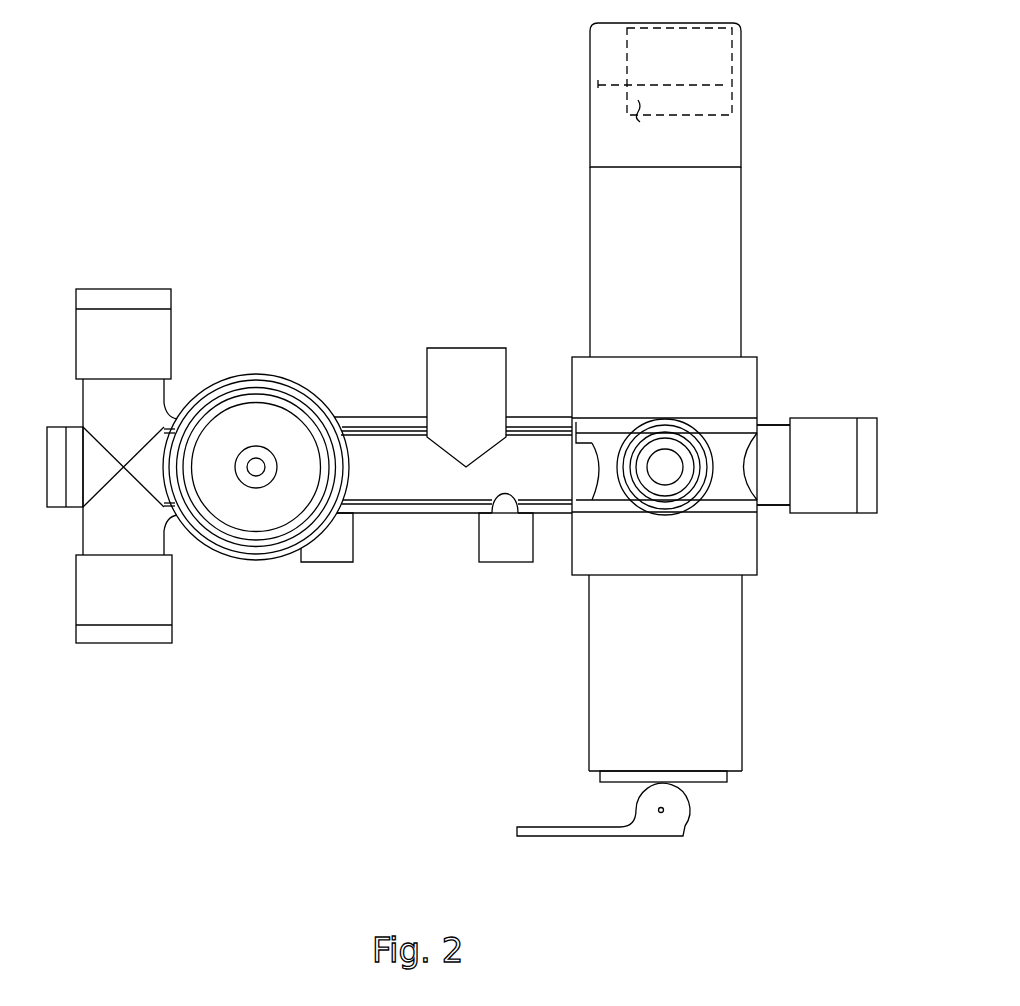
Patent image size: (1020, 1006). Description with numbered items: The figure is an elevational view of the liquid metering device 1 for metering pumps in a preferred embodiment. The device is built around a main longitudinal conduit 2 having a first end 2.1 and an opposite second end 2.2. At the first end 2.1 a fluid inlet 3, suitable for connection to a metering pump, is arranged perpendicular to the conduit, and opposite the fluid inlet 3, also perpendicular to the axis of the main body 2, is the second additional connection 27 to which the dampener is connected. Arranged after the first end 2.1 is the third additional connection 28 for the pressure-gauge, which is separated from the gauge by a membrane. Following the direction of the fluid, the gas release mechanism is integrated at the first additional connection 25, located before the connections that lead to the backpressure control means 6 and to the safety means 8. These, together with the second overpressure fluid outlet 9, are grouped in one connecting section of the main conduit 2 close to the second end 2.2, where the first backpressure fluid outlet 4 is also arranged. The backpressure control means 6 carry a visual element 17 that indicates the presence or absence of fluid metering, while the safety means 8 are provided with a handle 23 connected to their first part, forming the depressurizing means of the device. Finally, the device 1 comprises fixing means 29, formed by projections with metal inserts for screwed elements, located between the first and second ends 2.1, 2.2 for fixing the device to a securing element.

The liquid metering device 1 is at (347, 252).
The main longitudinal conduit 2 is at (422, 513).
The first end 2.1 is at (85, 490).
The second end 2.2 is at (870, 477).
The fluid inlet 3 is at (120, 642).
The first backpressure fluid outlet 4 is at (877, 465).
The backpressure control means 6 is at (717, 280).
The safety means 8 is at (639, 667).
The second overpressure fluid outlet 9 is at (670, 458).
The visual element 17 is at (657, 83).
The handle 23 is at (600, 832).
The first additional connection 25 is at (440, 380).
The second additional connection 27 is at (155, 332).
The third additional connection 28 is at (263, 427).
The fixing means 29 is at (318, 565).